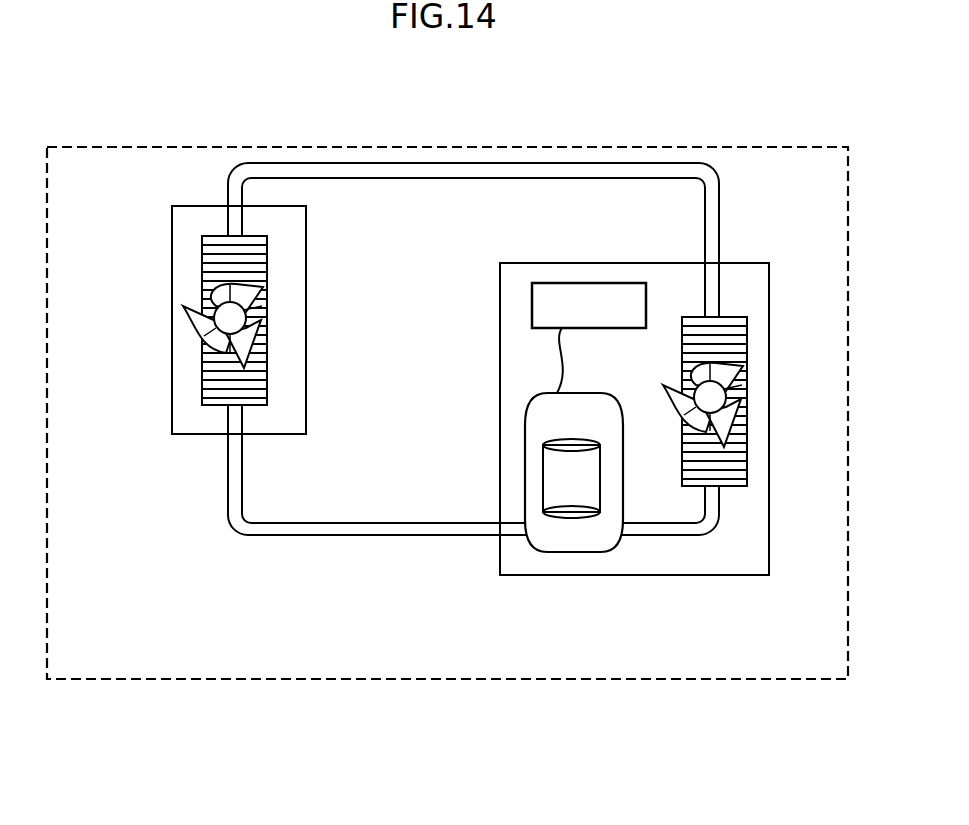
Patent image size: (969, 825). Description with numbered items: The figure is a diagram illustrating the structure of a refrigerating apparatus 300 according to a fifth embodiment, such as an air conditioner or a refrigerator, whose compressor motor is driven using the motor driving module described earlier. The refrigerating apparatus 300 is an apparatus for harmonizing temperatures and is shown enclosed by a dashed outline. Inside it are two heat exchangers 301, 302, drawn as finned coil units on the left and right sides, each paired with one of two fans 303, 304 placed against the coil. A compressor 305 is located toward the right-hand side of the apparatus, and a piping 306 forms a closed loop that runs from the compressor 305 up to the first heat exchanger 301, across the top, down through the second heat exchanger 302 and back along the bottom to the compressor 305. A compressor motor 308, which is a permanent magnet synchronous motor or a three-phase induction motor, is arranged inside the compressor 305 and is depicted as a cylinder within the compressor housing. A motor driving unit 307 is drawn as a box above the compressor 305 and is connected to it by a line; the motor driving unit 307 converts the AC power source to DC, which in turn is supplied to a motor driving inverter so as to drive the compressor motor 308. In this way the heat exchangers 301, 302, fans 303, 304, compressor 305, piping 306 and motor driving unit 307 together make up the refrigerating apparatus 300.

The refrigerating apparatus 300 is at (704, 146).
The heat exchanger 301 is at (226, 245).
The heat exchanger 302 is at (740, 327).
The fan 303 is at (194, 307).
The fan 304 is at (742, 390).
The compressor 305 is at (555, 542).
The piping 306 is at (347, 530).
The motor driving unit 307 is at (532, 310).
The compressor motor 308 is at (550, 466).